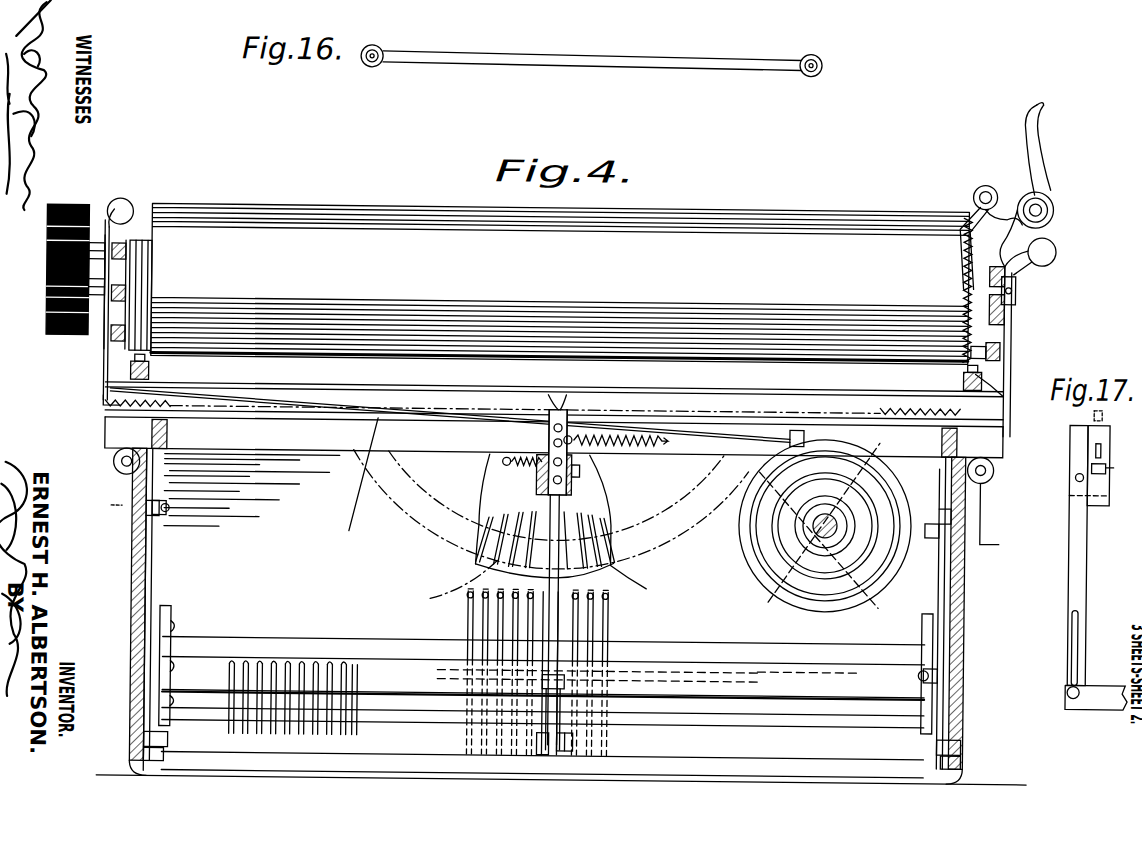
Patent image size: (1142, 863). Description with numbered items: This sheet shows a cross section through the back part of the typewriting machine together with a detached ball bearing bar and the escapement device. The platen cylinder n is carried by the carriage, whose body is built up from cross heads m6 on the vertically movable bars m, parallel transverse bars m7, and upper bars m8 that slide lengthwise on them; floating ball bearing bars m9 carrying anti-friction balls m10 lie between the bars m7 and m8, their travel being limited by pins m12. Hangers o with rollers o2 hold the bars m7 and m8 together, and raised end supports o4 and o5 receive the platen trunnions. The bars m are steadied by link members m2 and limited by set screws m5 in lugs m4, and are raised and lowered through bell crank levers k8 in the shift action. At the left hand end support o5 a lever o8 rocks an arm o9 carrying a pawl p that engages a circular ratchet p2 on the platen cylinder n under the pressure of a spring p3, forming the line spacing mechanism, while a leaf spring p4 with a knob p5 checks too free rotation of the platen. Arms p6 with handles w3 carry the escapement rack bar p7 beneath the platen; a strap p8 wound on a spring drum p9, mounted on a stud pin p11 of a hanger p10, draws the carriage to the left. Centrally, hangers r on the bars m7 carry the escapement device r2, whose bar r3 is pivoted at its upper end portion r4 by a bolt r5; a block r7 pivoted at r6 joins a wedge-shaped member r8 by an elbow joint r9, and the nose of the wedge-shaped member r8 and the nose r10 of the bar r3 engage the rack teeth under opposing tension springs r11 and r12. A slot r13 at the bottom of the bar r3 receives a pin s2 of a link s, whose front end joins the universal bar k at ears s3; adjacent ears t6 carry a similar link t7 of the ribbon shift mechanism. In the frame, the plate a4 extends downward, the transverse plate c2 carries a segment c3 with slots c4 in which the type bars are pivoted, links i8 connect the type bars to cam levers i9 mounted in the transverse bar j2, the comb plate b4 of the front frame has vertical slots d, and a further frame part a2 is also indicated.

In FIG. 4, the platen cylinder n is at (549, 283).
In FIG. 4, the hangers o is at (110, 438).
In FIG. 4, the rollers o2 is at (122, 474).
In FIG. 4, the end supports o4 is at (117, 332).
In FIG. 4, the left hand end support o5 is at (1003, 323).
In FIG. 4, the lever o8 is at (1034, 100).
In FIG. 4, the arm o9 is at (990, 183).
In FIG. 4, the pawl p is at (970, 222).
In FIG. 4, the circular ratchet p2 is at (958, 270).
In FIG. 4, the spring p3 is at (1045, 198).
In FIG. 4, the leaf spring p4 is at (986, 350).
In FIG. 4, the knob p5 is at (990, 365).
In FIG. 4, the arms p6 is at (104, 360).
In FIG. 4, the escapement rack bar p7 is at (548, 410).
In FIG. 17, the escapement rack bar p7 is at (1096, 408).
In FIG. 4, the strap p8 is at (790, 428).
In FIG. 4, the spring drum p9 is at (775, 580).
In FIG. 4, the hanger p10 is at (847, 525).
In FIG. 4, the stud pin p11 is at (822, 526).
In FIG. 4, the vertically movable bars m is at (160, 566).
In FIG. 4, the link members m2 is at (170, 512).
In FIG. 4, the lugs m4 is at (200, 738).
In FIG. 4, the set screws m5 is at (162, 764).
In FIG. 4, the cross heads m6 is at (168, 440).
In FIG. 4, the transverse bars m7 is at (322, 455).
In FIG. 4, the bars m8 is at (372, 390).
In FIG. 16, the ball bearing bars m9 is at (586, 53).
In FIG. 4, the ball bearing bars m9 is at (361, 480).
In FIG. 16, the anti-friction balls m10 is at (368, 70).
In FIG. 4, the anti-friction balls m10 is at (365, 422).
In FIG. 4, the pins m12 is at (115, 408).
In FIG. 4, the handles w3 is at (122, 206).
In FIG. 4, the hangers r is at (540, 493).
In FIG. 4, the escapement device r2 is at (565, 512).
In FIG. 4, the bar r3 is at (590, 548).
In FIG. 17, the bar r3 is at (1074, 528).
In FIG. 17, the upper end portion r4 is at (1076, 475).
In FIG. 4, the bolt r5 is at (582, 472).
In FIG. 17, the pivot r6 is at (1110, 490).
In FIG. 17, the block r7 is at (1104, 478).
In FIG. 4, the wedge-shaped member r8 is at (562, 386).
In FIG. 17, the wedge-shaped member r8 is at (1112, 427).
In FIG. 17, the elbow joint r9 is at (1113, 456).
In FIG. 4, the nose r10 is at (548, 430).
In FIG. 17, the nose r10 is at (1082, 425).
In FIG. 4, the tension spring r11 is at (612, 410).
In FIG. 4, the tension spring r12 is at (500, 470).
In FIG. 17, the slot r13 is at (1074, 620).
In FIG. 4, the transverse plate c2 is at (488, 490).
In FIG. 4, the segment c3 is at (633, 589).
In FIG. 4, the kerfs or slots c4 is at (478, 557).
In FIG. 4, the frame bracket a2 is at (140, 515).
In FIG. 4, the plate a4 is at (425, 579).
In FIG. 4, the links i8 is at (470, 598).
In FIG. 4, the cam levers i9 is at (590, 624).
In FIG. 4, the transverse bar j2 is at (716, 668).
In FIG. 4, the universal bar k is at (561, 710).
In FIG. 4, the bell crank levers k8 is at (180, 622).
In FIG. 4, the comb plate b4 is at (266, 700).
In FIG. 4, the vertical slots d is at (318, 700).
In FIG. 4, the link s is at (560, 712).
In FIG. 17, the link s is at (1104, 704).
In FIG. 4, the pin s2 is at (567, 682).
In FIG. 17, the pin s2 is at (1070, 684).
In FIG. 4, the ears s3 is at (540, 742).
In FIG. 4, the ears t6 is at (578, 740).
In FIG. 4, the link t7 is at (568, 752).